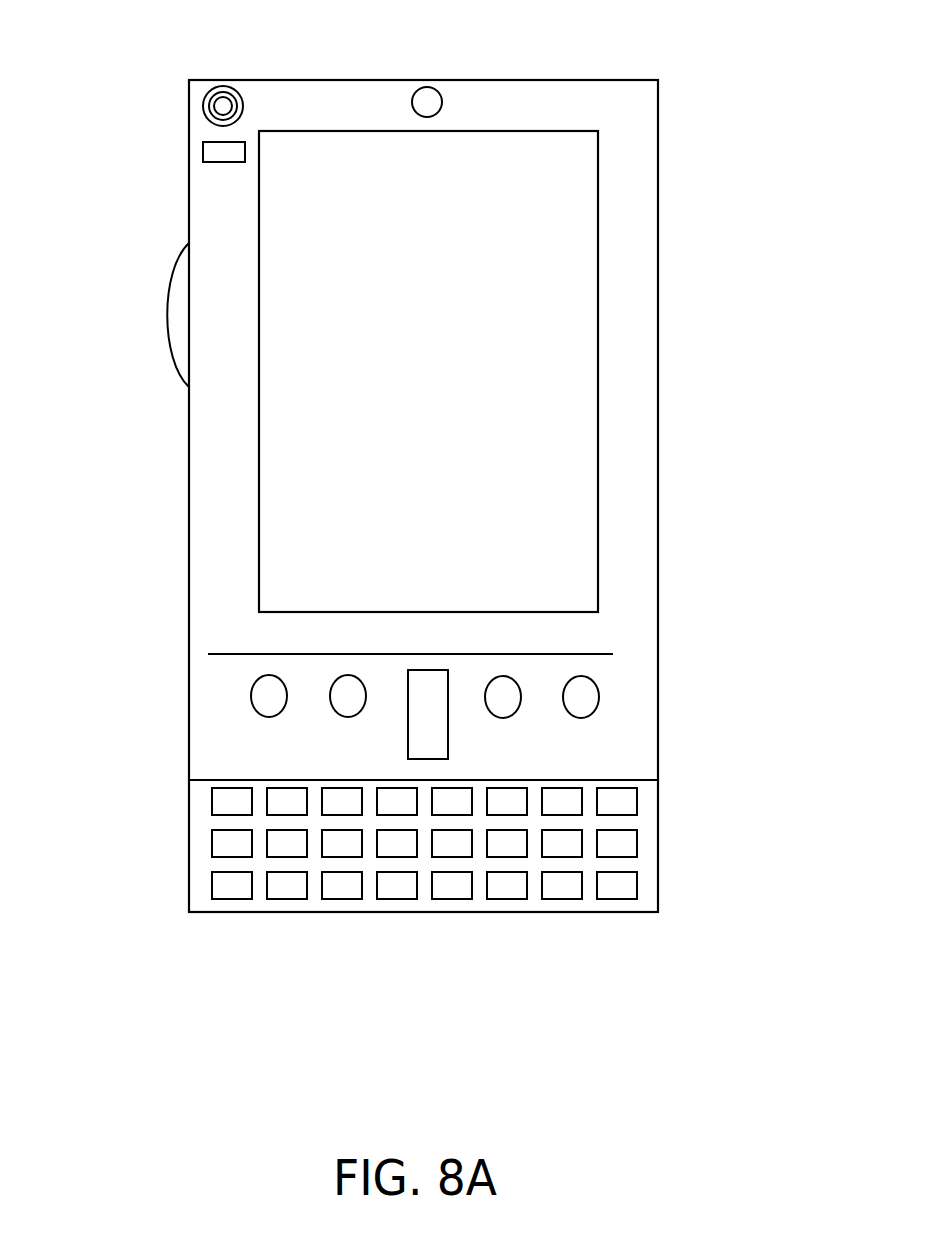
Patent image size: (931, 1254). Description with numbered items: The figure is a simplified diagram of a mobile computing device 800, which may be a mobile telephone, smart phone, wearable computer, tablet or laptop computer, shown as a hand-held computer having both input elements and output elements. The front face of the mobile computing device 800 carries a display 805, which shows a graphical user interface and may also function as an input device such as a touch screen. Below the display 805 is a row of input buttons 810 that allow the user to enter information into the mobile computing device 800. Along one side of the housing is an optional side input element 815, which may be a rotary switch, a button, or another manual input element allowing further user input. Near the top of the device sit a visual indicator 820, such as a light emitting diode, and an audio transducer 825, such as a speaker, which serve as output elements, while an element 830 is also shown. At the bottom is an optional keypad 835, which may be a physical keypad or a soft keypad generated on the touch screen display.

The mobile computing device 800 is at (647, 97).
The display 805 is at (363, 530).
The input buttons 810 is at (427, 722).
The side input element 815 is at (180, 314).
The visual indicator 820 is at (204, 155).
The audio transducer 825 is at (200, 107).
The sensor 830 is at (439, 98).
The keypad 835 is at (198, 888).